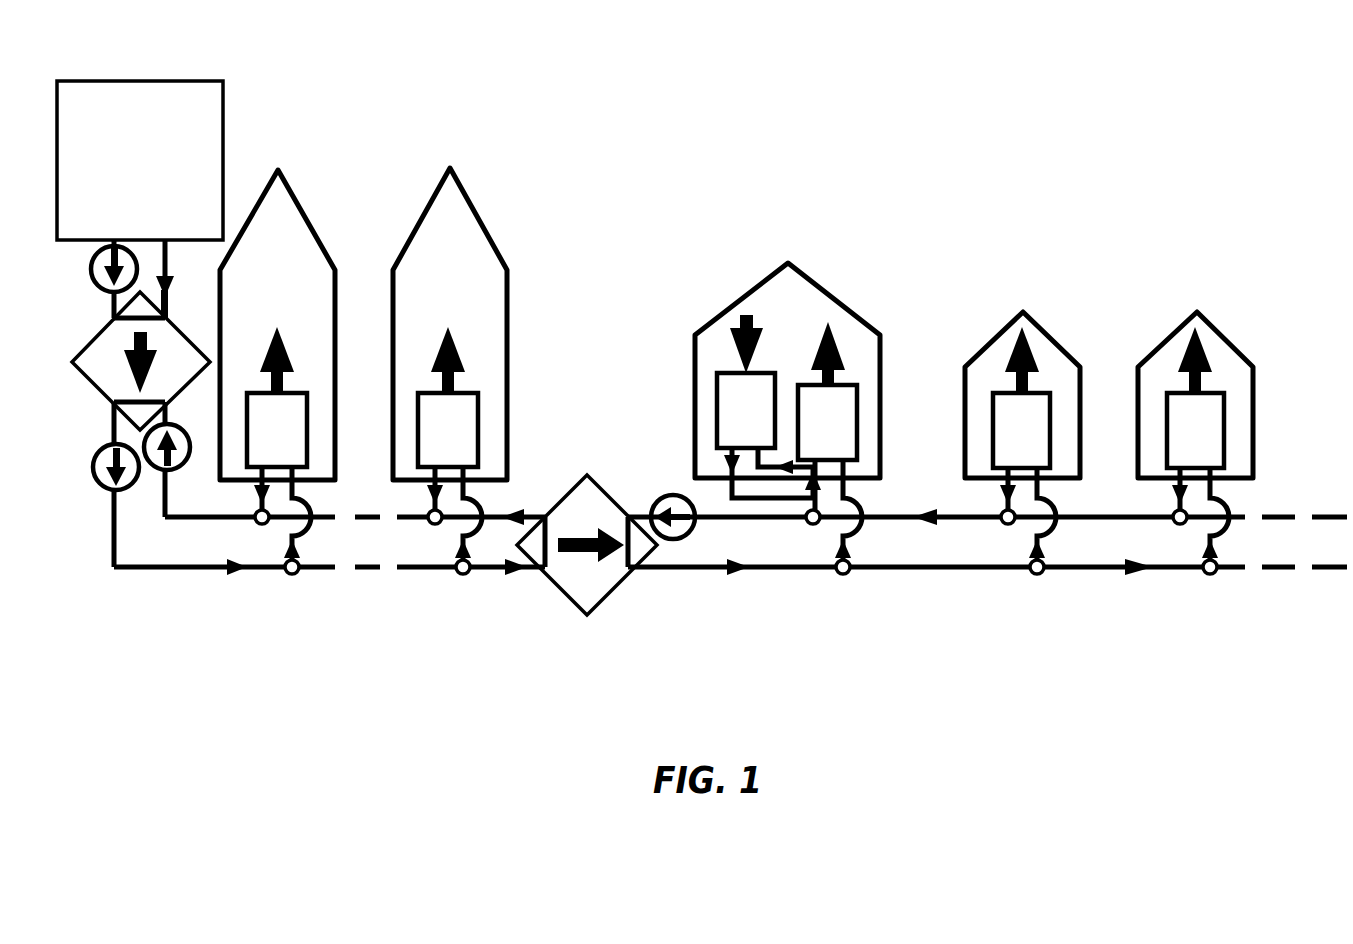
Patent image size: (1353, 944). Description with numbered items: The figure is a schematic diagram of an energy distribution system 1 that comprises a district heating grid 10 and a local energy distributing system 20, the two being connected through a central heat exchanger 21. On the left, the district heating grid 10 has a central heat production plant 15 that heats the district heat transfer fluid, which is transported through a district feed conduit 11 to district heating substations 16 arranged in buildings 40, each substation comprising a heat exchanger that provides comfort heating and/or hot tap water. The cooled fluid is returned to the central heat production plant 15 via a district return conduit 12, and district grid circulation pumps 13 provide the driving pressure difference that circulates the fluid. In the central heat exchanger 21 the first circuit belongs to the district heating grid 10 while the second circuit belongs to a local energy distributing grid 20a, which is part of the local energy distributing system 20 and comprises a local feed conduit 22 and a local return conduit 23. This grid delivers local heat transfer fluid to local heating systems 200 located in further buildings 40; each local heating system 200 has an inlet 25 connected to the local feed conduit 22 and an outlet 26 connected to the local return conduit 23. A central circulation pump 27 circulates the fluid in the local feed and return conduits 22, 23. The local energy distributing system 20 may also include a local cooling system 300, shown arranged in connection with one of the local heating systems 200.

The energy distribution system 1 is at (614, 136).
The district heating grid 10 is at (284, 616).
The district feed conduit 11 is at (165, 570).
The district return conduit 12 is at (187, 520).
The district grid circulation pump 13 is at (112, 488).
The central heat production plant 15 is at (214, 114).
The district heating substation 16 is at (293, 410).
The local energy distributing system 20 is at (976, 236).
The local energy distributing grid 20a is at (1049, 621).
The central heat exchanger 21 is at (582, 585).
The local feed conduit 22 is at (793, 573).
The local return conduit 23 is at (960, 521).
The inlet 25 is at (850, 488).
The outlet 26 is at (810, 508).
The central circulation pump 27 is at (661, 494).
The building 40 is at (293, 217).
The local heating system 200 is at (862, 364).
The local cooling system 300 is at (721, 352).